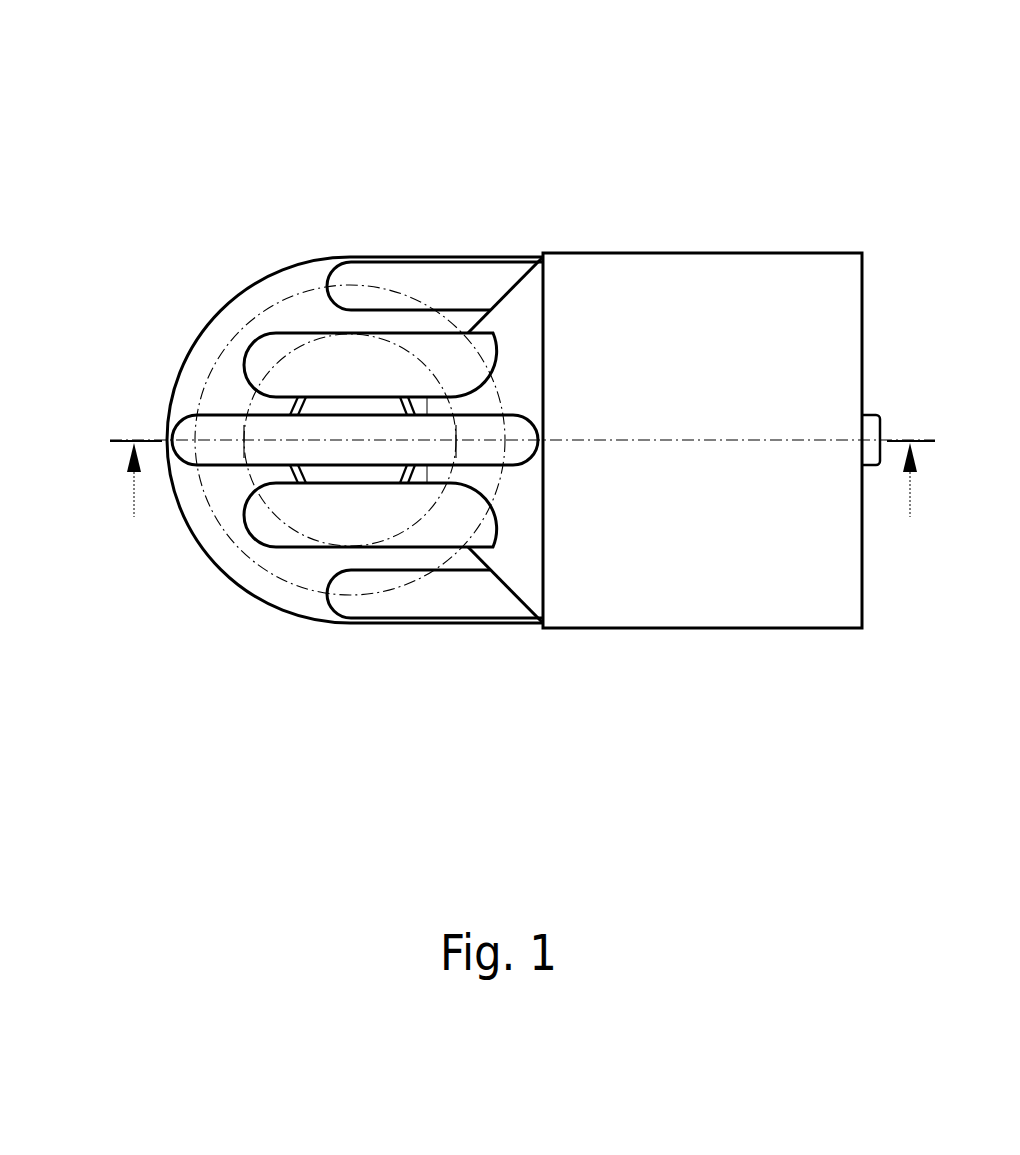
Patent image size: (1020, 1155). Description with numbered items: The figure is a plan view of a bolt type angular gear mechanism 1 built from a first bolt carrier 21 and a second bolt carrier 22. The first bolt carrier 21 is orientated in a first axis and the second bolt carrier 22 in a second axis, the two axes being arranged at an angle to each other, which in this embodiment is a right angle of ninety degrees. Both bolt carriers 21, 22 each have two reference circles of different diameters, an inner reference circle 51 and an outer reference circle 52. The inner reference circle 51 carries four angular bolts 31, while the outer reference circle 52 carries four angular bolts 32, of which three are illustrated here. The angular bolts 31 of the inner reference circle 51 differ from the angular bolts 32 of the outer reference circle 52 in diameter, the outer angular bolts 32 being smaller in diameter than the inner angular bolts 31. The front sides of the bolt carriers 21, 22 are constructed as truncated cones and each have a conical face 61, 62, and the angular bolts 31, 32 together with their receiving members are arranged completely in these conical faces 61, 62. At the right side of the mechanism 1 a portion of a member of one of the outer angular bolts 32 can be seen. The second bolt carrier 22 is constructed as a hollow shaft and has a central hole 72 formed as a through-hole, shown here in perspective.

The bolt type angular gear mechanism 1 is at (769, 158).
The first bolt carrier 21 is at (583, 628).
The second bolt carrier 22 is at (285, 617).
The angular bolts of the inner reference circle 31 is at (300, 333).
The angular bolts of the outer reference circle 32 is at (420, 257).
The inner reference circle 51 is at (248, 405).
The outer reference circle 52 is at (222, 525).
The conical face 61 is at (508, 592).
The conical face 62 is at (273, 558).
The central hole 72 is at (300, 397).